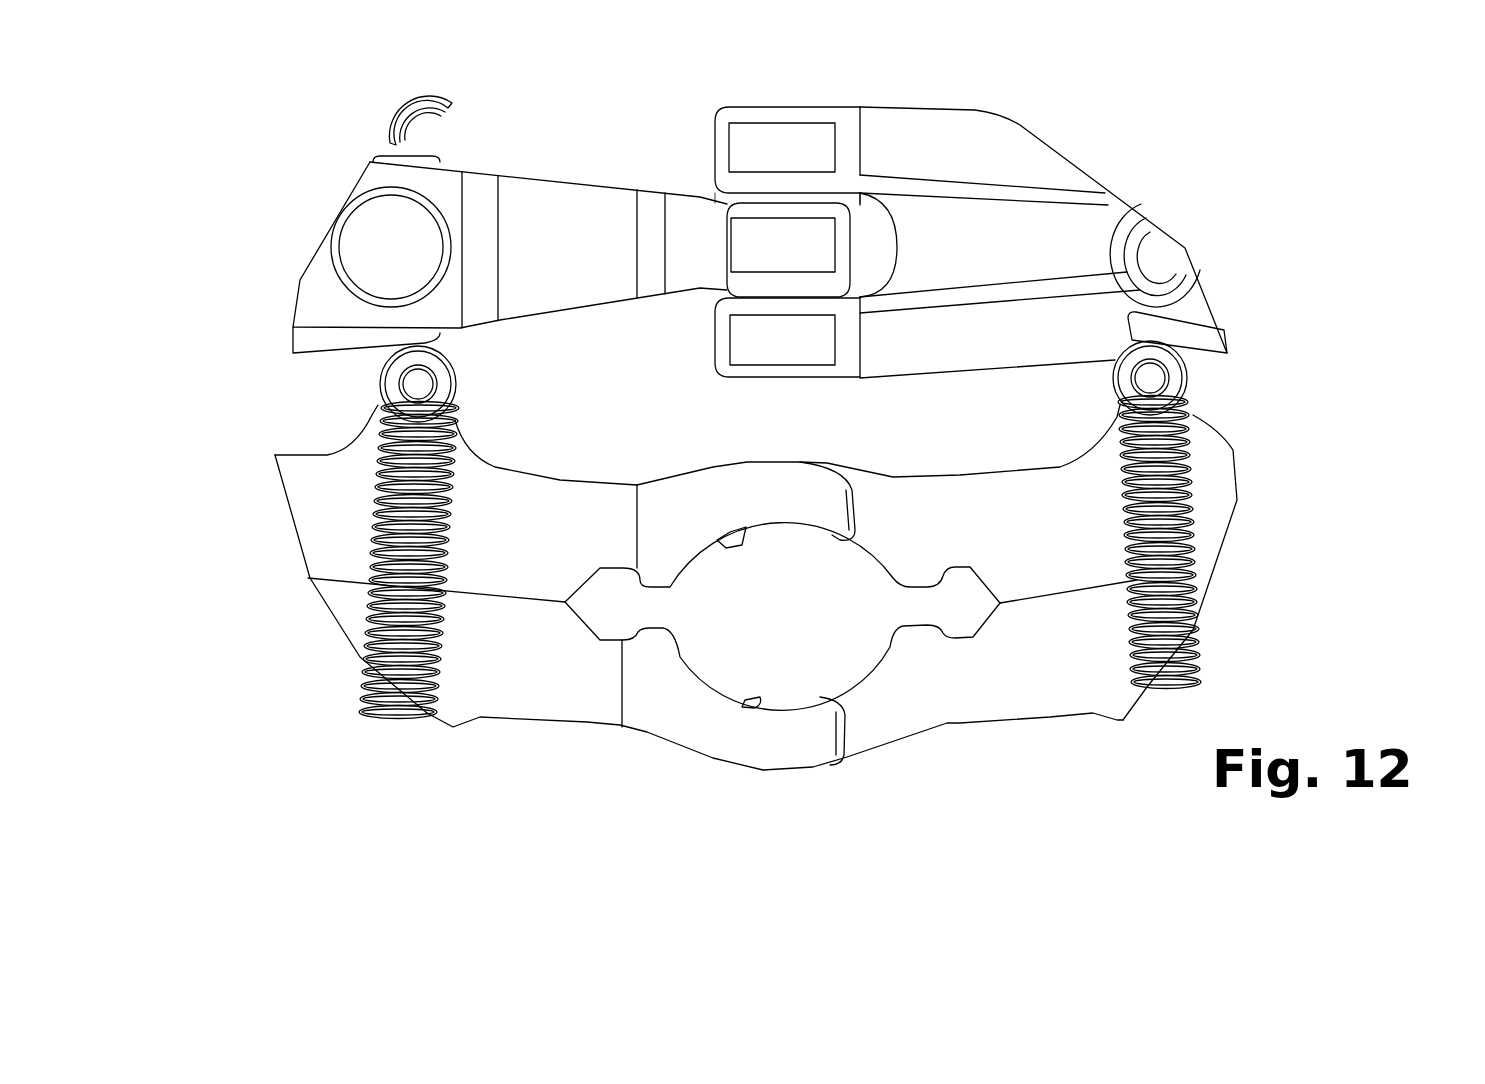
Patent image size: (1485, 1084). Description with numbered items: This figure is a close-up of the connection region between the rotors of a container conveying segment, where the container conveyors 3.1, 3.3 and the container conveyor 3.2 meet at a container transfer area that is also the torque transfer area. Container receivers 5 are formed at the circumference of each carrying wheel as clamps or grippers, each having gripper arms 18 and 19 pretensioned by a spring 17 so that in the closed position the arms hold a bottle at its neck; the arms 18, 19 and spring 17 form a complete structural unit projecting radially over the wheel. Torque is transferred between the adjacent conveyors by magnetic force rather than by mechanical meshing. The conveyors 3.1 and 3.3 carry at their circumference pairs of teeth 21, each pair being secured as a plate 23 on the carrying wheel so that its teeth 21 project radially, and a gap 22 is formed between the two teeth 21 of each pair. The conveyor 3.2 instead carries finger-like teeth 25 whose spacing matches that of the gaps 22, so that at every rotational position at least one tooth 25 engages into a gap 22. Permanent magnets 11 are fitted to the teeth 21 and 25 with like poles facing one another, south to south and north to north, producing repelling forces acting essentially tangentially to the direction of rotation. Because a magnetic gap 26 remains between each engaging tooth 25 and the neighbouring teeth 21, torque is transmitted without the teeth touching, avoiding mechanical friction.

The container conveyor 3.1 is at (1262, 212).
The container conveyor 3.3 is at (1062, 193).
The container conveyor 3.2 is at (305, 718).
The container receiver 5 is at (518, 758).
The permanent magnet 11 is at (825, 150).
The spring 17 is at (1200, 522).
The gripper arm 18 is at (572, 505).
The gripper arm 19 is at (1003, 505).
The tooth 21 is at (713, 128).
The gap 22 is at (880, 235).
The plate 23 is at (938, 253).
The tooth 25 is at (540, 220).
The magnetic gap 26 is at (795, 273).